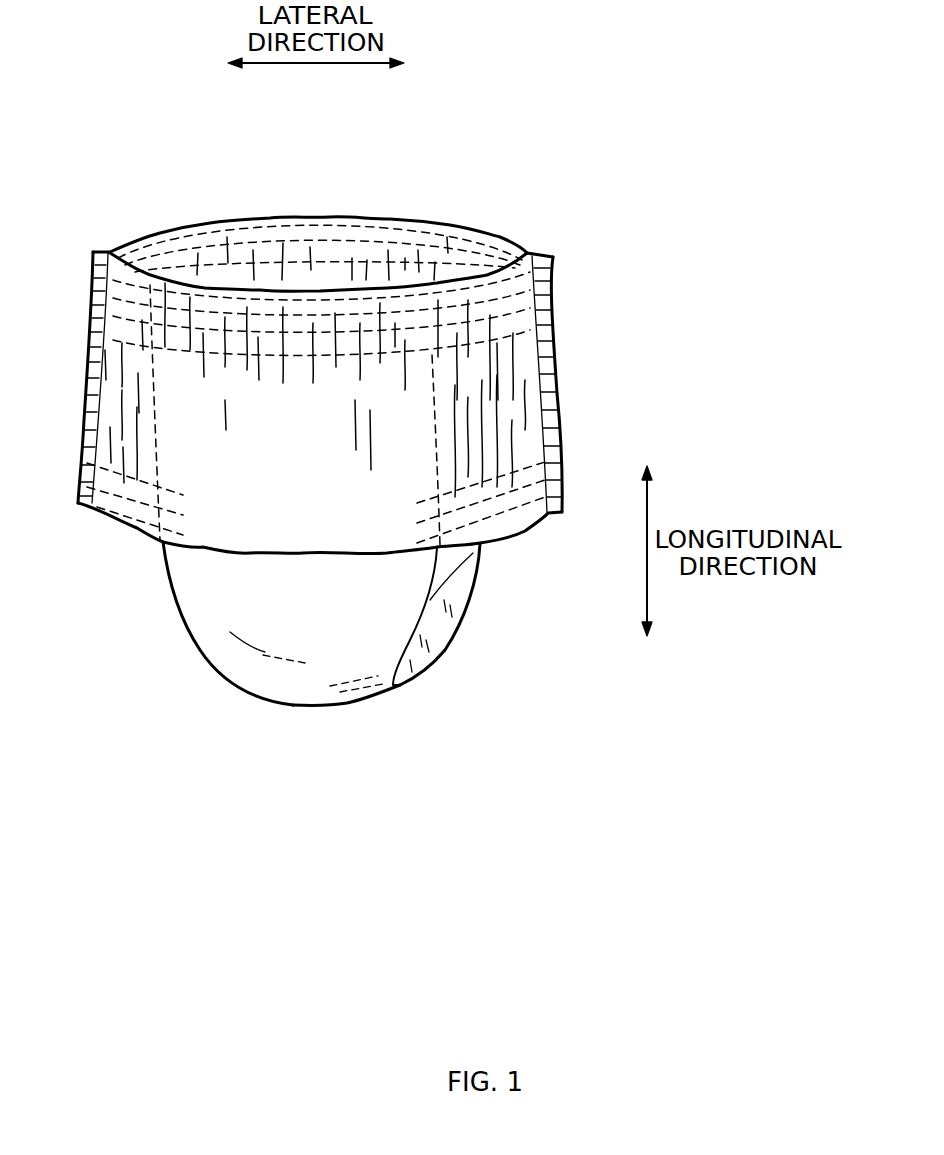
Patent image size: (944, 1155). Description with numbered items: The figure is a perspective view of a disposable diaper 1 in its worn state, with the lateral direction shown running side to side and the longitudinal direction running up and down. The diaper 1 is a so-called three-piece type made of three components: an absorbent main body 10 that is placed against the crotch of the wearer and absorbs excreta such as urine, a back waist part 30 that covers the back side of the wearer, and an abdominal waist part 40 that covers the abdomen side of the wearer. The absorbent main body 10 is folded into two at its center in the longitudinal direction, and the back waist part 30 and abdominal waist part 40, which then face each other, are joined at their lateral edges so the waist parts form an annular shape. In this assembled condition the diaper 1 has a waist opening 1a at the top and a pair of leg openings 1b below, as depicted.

The diaper 1 is at (556, 135).
The waist opening 1a is at (327, 246).
The leg openings 1b is at (176, 626).
The absorbent main body 10 is at (274, 711).
The back waist part 30 is at (248, 230).
The abdominal waist part 40 is at (170, 282).